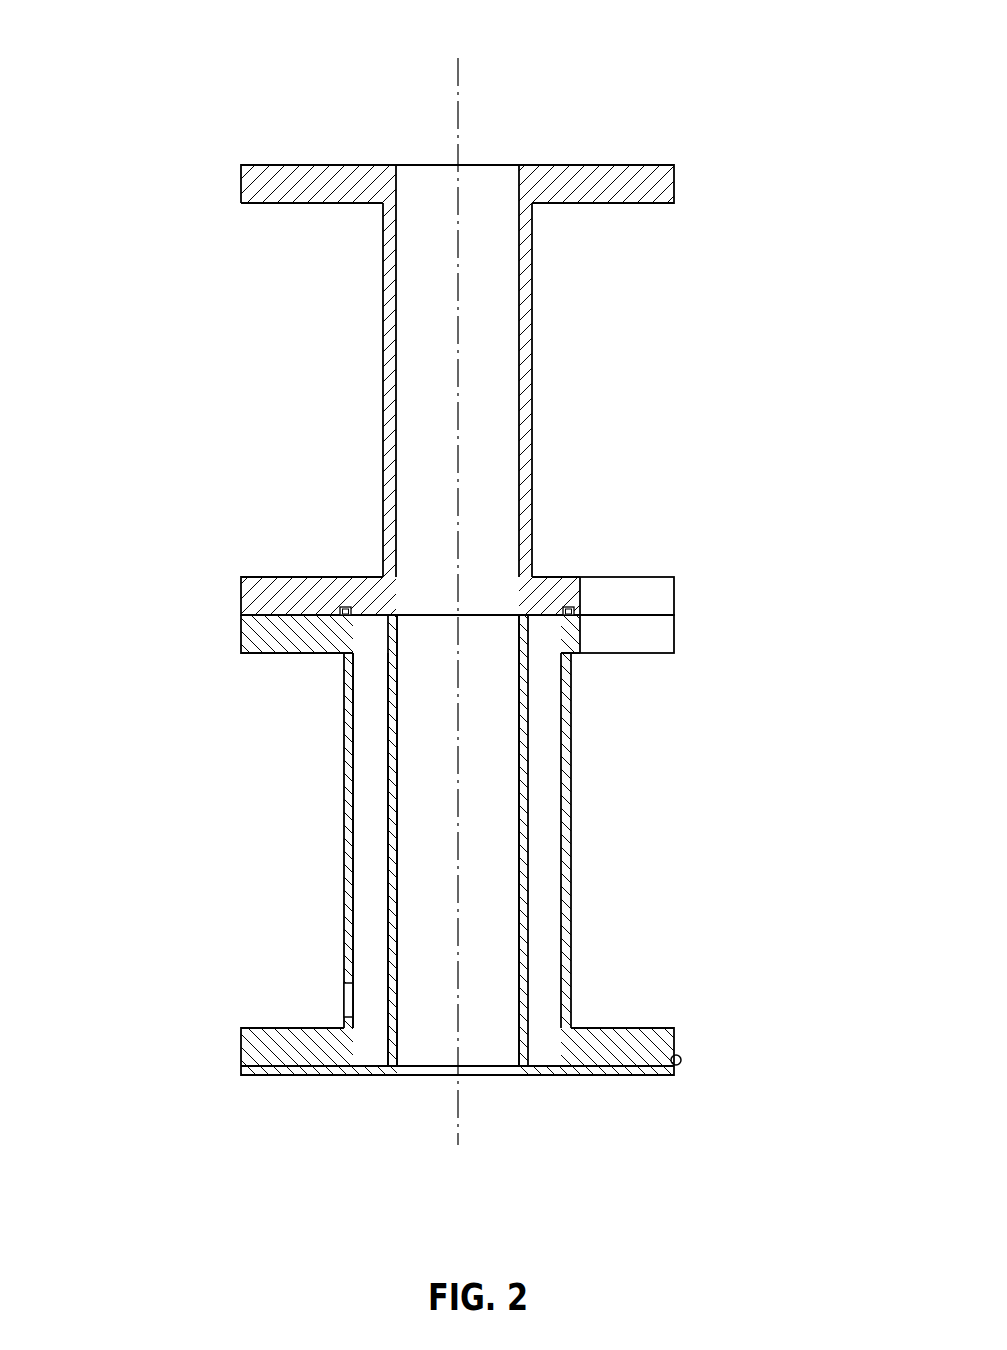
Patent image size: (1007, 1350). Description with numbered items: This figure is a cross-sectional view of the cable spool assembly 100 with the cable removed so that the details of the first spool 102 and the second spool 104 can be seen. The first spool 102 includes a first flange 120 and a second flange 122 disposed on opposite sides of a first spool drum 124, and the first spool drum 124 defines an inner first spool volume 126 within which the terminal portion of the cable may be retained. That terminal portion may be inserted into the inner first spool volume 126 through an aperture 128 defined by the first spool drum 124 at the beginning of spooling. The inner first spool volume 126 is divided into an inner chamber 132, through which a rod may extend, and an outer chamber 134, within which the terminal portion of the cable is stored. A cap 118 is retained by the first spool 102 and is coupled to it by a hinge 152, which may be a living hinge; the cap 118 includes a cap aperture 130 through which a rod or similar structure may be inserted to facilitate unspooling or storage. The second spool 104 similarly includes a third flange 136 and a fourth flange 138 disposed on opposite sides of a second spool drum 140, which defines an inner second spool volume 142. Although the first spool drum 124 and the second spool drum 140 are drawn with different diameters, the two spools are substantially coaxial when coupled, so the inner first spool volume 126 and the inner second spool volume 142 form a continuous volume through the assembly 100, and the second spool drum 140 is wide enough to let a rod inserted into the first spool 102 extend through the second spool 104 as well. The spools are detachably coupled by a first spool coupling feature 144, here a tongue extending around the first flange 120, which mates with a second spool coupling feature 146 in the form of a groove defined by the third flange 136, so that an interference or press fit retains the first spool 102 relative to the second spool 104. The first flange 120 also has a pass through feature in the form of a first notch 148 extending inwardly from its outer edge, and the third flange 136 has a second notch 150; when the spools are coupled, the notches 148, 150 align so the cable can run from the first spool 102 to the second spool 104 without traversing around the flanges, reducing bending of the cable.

The cable spool assembly 100 is at (712, 53).
The first spool 102 is at (737, 848).
The second spool 104 is at (716, 385).
The cap 118 is at (262, 1073).
The first flange 120 is at (252, 638).
The second flange 122 is at (252, 1050).
The first spool drum 124 is at (347, 790).
The inner first spool volume 126 is at (420, 908).
The aperture 128 is at (343, 1002).
The cap aperture 130 is at (437, 1068).
The inner chamber 132 is at (435, 858).
The outer chamber 134 is at (374, 950).
The third flange 136 is at (242, 593).
The fourth flange 138 is at (242, 181).
The second spool drum 140 is at (383, 368).
The inner second spool volume 142 is at (428, 462).
The first spool coupling feature 144 is at (343, 616).
The second spool coupling feature 146 is at (343, 611).
The first notch 148 is at (626, 633).
The second notch 150 is at (626, 597).
The hinge 152 is at (682, 1058).